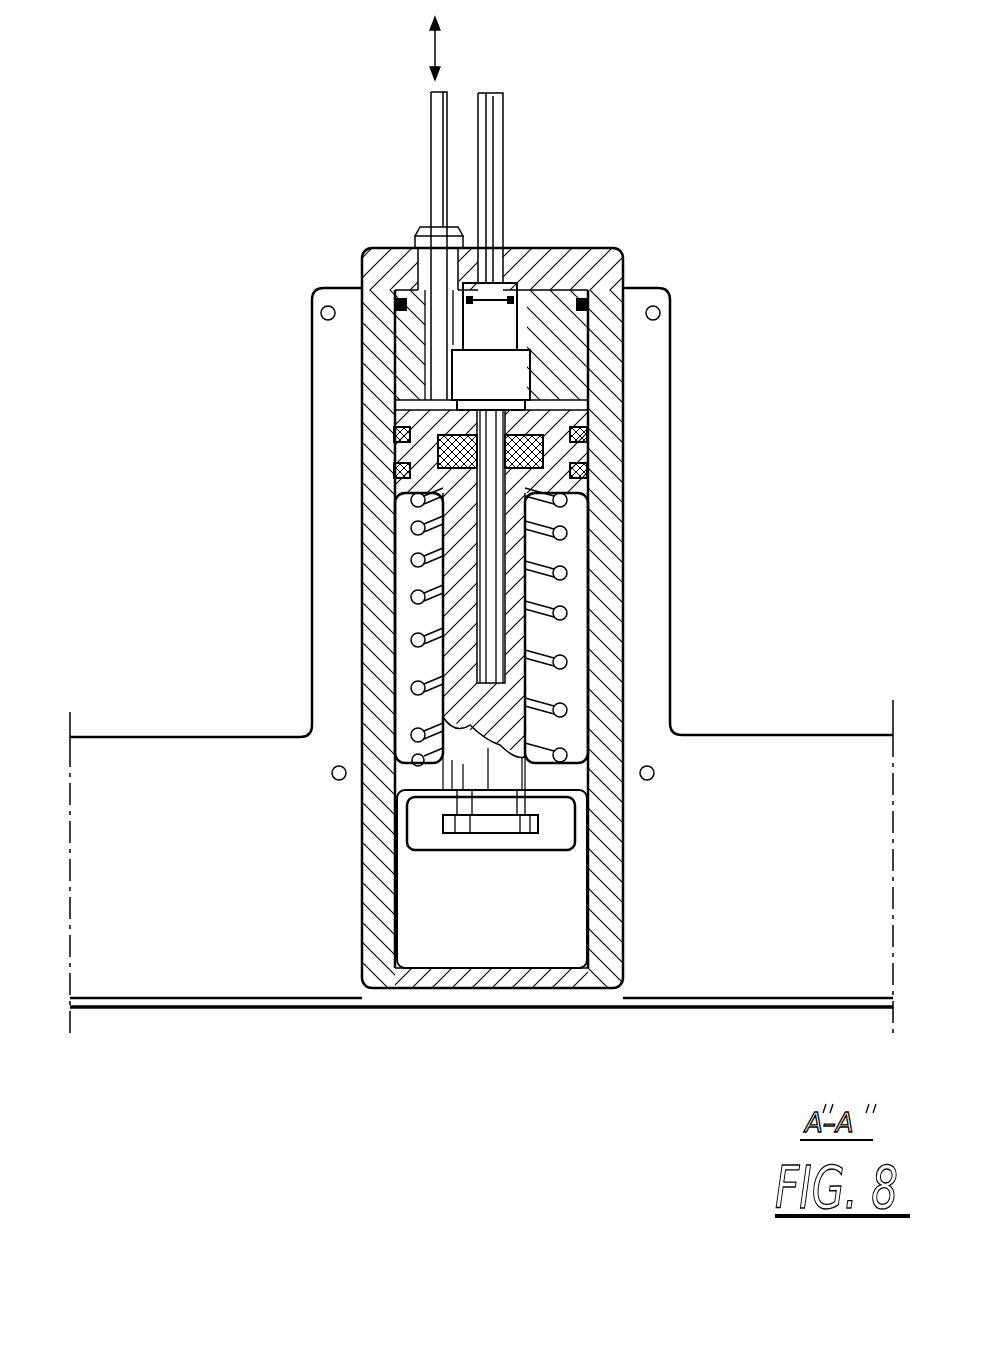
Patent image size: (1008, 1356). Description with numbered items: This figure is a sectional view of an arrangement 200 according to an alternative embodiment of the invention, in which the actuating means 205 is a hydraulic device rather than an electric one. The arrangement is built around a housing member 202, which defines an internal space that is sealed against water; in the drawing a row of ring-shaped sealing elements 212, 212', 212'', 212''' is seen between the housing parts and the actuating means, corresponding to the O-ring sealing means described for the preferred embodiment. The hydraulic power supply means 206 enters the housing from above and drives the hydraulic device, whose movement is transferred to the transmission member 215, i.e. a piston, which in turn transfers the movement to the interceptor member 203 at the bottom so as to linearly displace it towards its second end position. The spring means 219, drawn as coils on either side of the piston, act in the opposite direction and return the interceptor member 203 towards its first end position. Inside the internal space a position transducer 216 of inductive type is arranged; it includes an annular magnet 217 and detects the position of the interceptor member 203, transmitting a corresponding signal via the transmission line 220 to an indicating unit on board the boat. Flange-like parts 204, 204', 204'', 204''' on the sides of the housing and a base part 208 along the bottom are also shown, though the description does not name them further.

The arrangement 200 is at (481, 570).
The housing member 202 is at (312, 386).
The interceptor member 203 is at (427, 833).
The flange 204 is at (216, 501).
The flange fastening point 204' is at (255, 723).
The flange fastening point 204'' is at (741, 709).
The flange 204''' is at (758, 489).
The actuating means 205 is at (298, 333).
The power supply means 206 is at (436, 160).
The base plate 208 is at (245, 1003).
The sealing ring 212 is at (286, 427).
The sealing ring 212' is at (286, 473).
The sealing ring 212'' is at (702, 417).
The sealing ring 212''' is at (706, 484).
The transmission member 215 is at (445, 620).
The position transducer 216 is at (490, 380).
The annular magnet 217 is at (545, 455).
The spring means 219 is at (562, 580).
The transmission line 220 is at (490, 165).